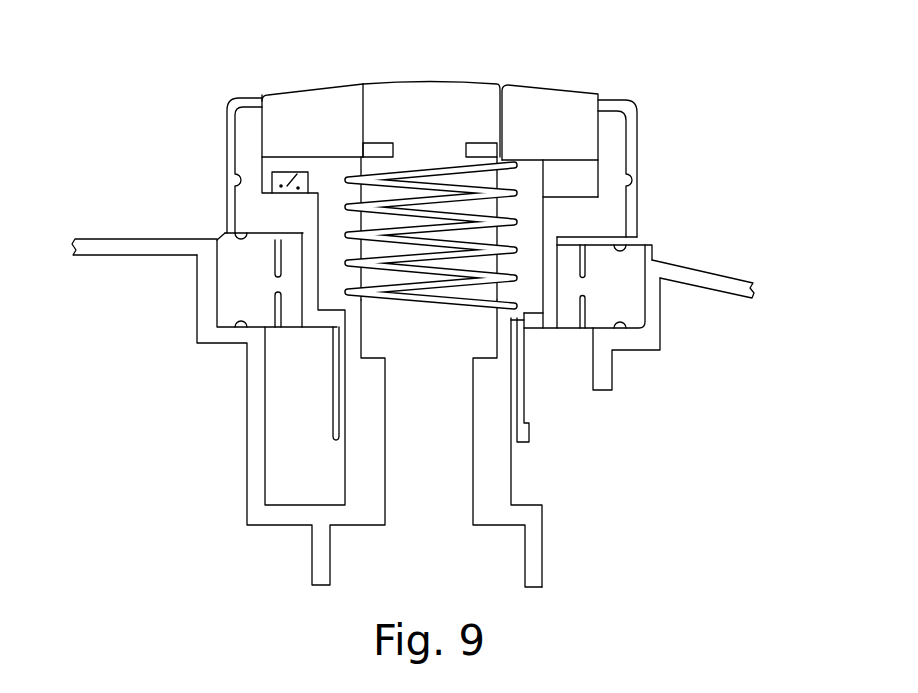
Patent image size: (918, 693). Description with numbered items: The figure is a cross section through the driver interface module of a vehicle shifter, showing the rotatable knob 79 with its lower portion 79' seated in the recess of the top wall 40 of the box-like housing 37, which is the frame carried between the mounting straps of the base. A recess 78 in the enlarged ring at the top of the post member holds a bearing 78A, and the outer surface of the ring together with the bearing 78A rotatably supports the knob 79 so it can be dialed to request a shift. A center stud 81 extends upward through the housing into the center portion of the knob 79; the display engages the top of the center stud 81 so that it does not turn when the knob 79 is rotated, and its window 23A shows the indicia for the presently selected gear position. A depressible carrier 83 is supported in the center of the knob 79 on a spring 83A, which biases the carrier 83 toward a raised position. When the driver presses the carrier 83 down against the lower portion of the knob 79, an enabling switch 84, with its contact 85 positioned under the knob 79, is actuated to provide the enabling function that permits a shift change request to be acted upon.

The window 23A is at (418, 82).
The depressible carrier 83 is at (291, 176).
The recess 78 is at (333, 168).
The enabling switch 84 is at (281, 185).
The contact 85 is at (272, 187).
The left outer wall 79' is at (224, 165).
The knob 79 is at (623, 167).
The bearing 78A is at (232, 304).
The box-like housing 37 is at (708, 270).
The top wall 40 is at (680, 267).
The center stud 81 is at (460, 348).
The spring 83A is at (397, 300).